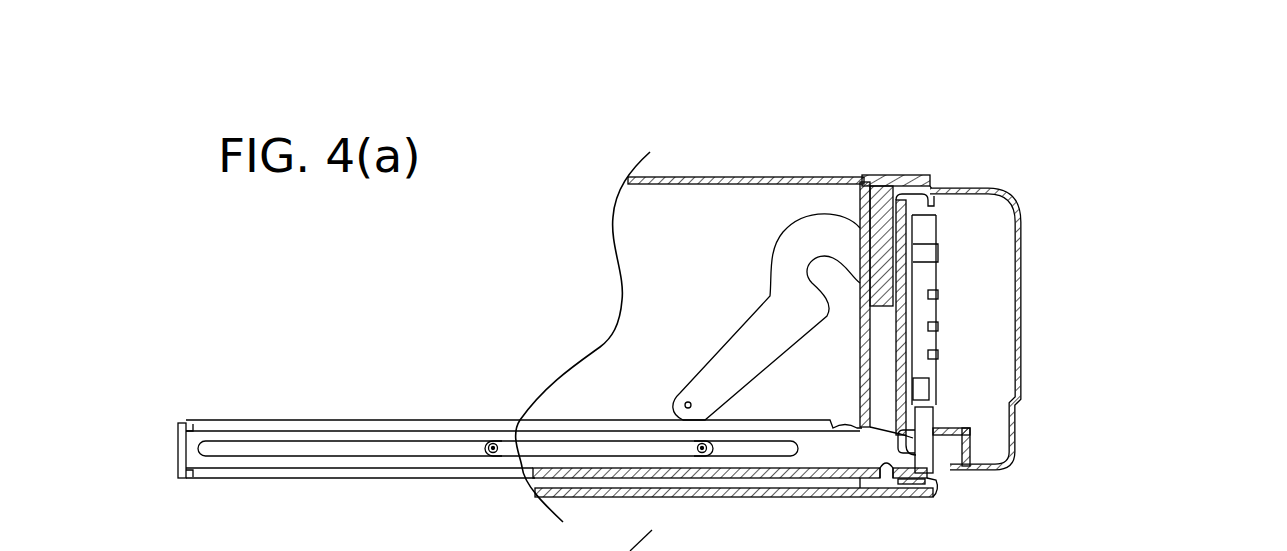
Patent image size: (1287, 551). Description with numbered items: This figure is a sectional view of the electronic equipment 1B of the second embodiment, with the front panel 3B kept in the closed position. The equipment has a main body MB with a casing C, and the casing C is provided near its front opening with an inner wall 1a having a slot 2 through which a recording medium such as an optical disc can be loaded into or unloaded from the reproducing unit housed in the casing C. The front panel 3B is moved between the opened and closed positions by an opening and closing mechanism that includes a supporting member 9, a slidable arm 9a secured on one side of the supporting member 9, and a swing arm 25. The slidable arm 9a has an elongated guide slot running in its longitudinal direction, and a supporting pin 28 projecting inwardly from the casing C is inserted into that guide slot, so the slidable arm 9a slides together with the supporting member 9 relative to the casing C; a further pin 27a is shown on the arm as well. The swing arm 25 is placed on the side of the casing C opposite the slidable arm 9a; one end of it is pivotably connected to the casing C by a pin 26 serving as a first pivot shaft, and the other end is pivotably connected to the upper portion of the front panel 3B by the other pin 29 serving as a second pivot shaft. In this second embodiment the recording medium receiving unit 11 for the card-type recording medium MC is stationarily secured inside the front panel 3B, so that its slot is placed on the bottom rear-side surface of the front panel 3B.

The main body MB is at (680, 160).
The casing C is at (715, 177).
The swing arm 25 is at (806, 226).
The slot 2 is at (877, 198).
The electronic equipment 1B is at (900, 180).
The pin 29 is at (918, 222).
The front panel 3B is at (1016, 206).
The inner wall 1a is at (868, 312).
The recording medium receiving unit 11 is at (940, 347).
The pin 26 is at (686, 402).
The supporting member 9 is at (778, 420).
The slidable arm 9a is at (236, 464).
The supporting pin 28 is at (496, 453).
The pin 27a is at (704, 453).
The card-type recording medium MC is at (933, 455).